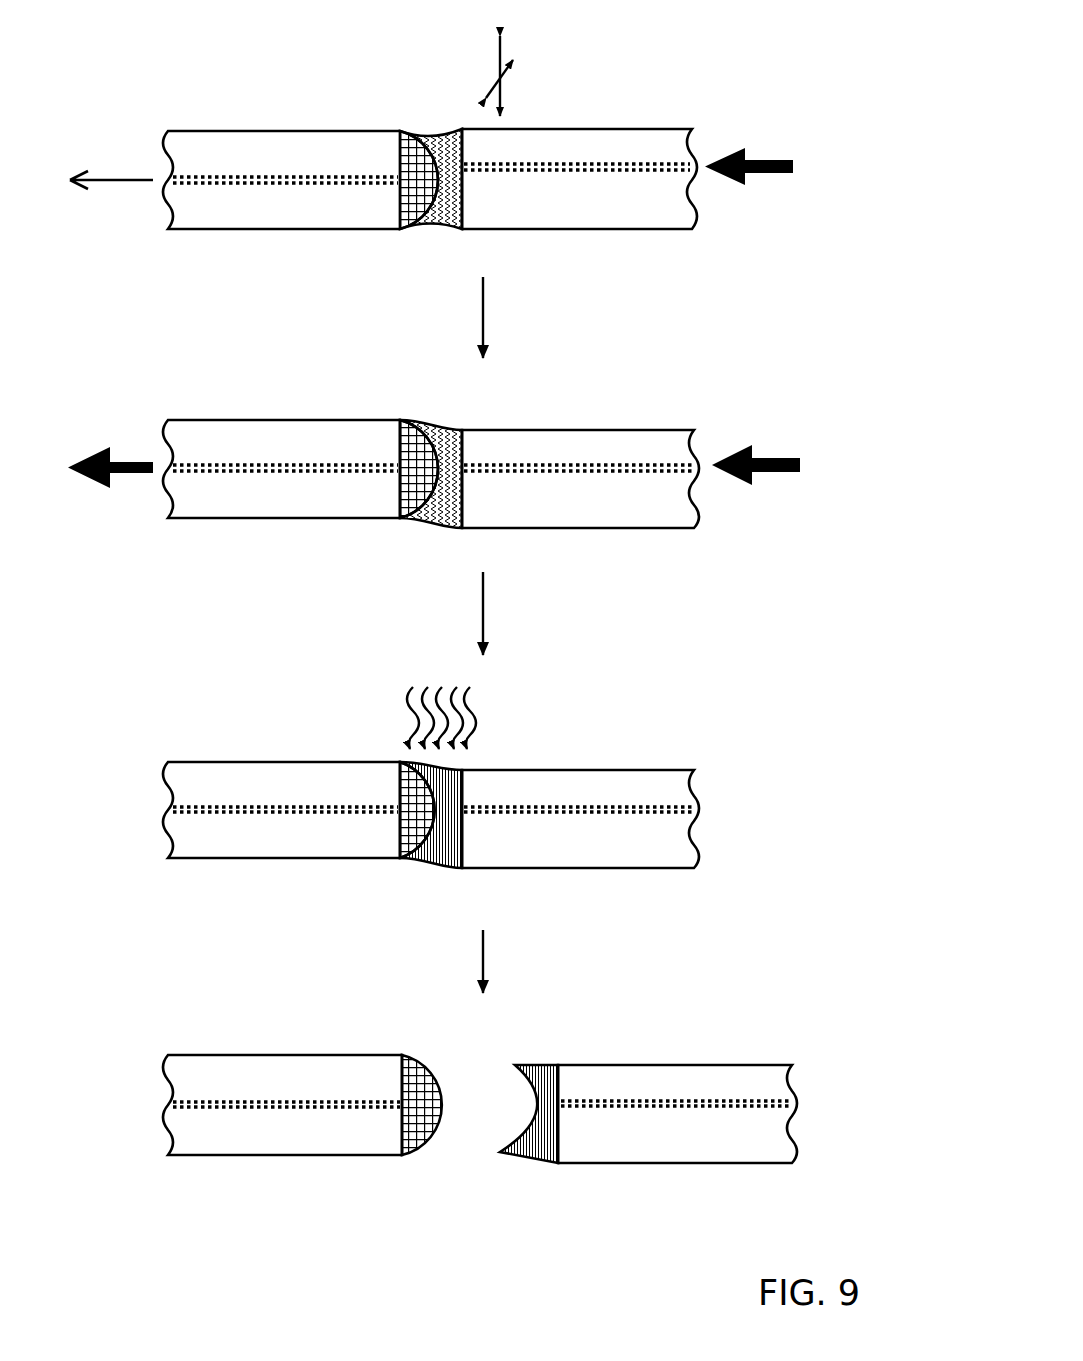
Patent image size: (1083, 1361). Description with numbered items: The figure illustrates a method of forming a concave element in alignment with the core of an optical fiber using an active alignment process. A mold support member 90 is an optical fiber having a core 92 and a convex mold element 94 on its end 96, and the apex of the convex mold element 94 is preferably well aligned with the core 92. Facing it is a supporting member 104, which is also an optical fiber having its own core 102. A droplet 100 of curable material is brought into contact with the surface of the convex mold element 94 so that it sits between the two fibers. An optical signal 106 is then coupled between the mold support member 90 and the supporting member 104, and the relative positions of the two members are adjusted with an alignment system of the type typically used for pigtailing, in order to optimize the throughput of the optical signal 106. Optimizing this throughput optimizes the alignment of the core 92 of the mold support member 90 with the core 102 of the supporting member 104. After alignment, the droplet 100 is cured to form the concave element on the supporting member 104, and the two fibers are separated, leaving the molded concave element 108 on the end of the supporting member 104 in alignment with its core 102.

The mold support member 90 is at (224, 126).
The core 92 is at (232, 188).
The convex mold element 94 is at (412, 126).
The end 96 is at (390, 153).
The droplet 100 is at (452, 234).
The core 102 is at (723, 1112).
The supporting member 104 is at (588, 123).
The optical signal 106 is at (129, 168).
The concave fractured end of second rod 108 is at (530, 1167).